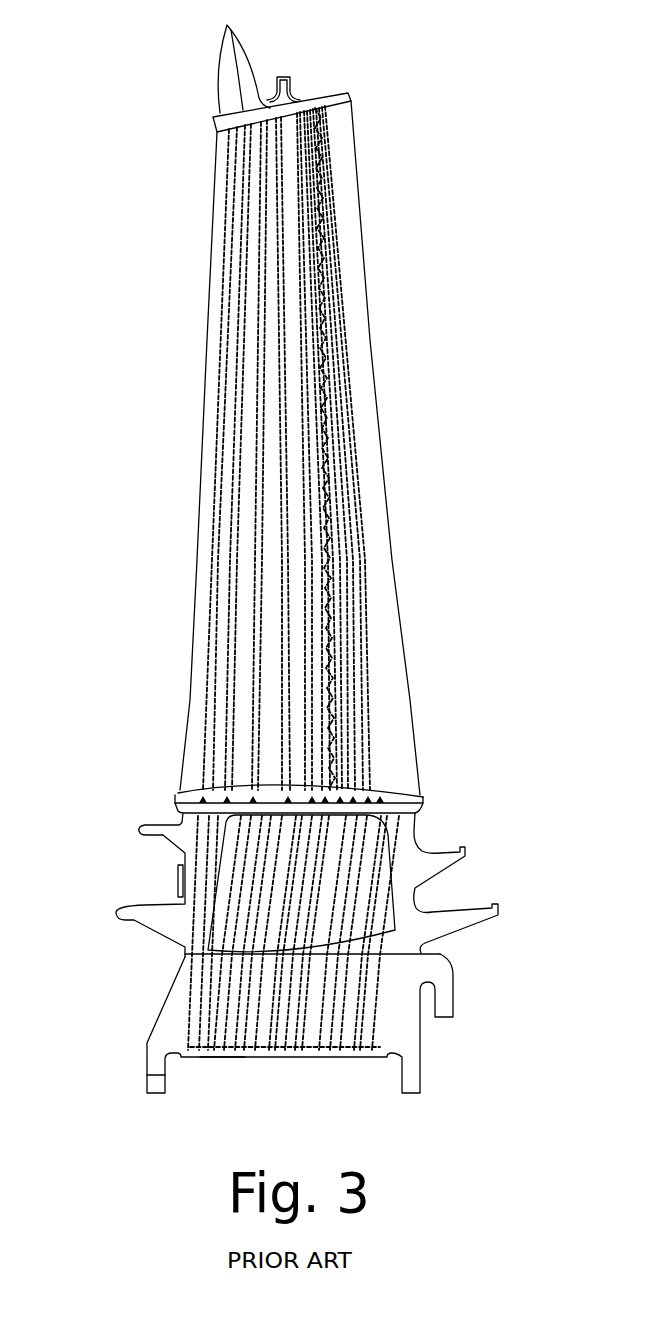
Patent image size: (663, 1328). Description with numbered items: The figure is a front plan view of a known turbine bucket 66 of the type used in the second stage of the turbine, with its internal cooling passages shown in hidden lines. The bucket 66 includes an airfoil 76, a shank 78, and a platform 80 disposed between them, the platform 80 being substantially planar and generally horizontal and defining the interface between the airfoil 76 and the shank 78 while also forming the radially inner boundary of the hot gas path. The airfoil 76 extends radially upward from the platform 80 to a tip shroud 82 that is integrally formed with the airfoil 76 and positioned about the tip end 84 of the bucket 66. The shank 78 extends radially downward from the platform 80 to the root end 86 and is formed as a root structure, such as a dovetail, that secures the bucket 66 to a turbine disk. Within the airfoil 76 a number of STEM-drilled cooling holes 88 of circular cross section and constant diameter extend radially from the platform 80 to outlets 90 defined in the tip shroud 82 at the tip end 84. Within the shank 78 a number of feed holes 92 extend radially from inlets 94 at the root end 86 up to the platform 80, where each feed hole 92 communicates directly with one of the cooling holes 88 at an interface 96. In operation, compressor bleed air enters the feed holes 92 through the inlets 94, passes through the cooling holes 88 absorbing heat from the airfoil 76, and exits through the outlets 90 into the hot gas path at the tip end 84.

The bucket 66 is at (176, 40).
The airfoil 76 is at (396, 553).
The shank 78 is at (415, 890).
The platform 80 is at (178, 794).
The tip shroud 82 is at (349, 93).
The tip end 84 is at (349, 41).
The root end 86 is at (403, 1111).
The cooling holes 88 is at (255, 473).
The outlet 90 is at (239, 56).
The feed holes 92 is at (233, 1003).
The inlet 94 is at (207, 1057).
The interface 96 is at (250, 790).